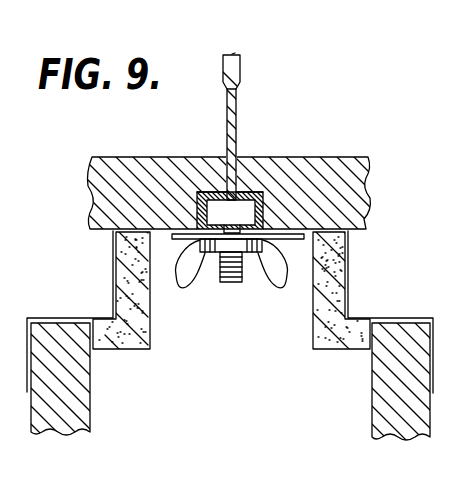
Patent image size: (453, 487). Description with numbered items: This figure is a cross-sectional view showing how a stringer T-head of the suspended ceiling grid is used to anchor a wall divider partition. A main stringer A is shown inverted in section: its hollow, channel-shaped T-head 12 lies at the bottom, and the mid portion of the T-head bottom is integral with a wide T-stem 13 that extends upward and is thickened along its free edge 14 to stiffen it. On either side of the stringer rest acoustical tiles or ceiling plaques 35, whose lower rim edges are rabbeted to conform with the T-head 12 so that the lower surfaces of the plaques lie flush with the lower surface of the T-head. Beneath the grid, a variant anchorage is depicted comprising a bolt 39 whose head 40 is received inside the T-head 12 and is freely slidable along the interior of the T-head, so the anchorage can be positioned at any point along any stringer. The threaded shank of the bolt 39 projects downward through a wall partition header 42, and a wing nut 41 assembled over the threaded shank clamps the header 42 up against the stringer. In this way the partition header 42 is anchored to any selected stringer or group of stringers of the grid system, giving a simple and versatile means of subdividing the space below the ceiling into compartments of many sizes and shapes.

The ceiling plaque 35 is at (157, 157).
The T-head 12 is at (197, 205).
The T-stem 13 is at (235, 112).
The free edge 14 is at (237, 75).
The bolt head 40 is at (245, 213).
The bolt 39 is at (235, 278).
The wing nut 41 is at (280, 273).
The wall partition header 42 is at (348, 287).
The main stringer A is at (243, 52).